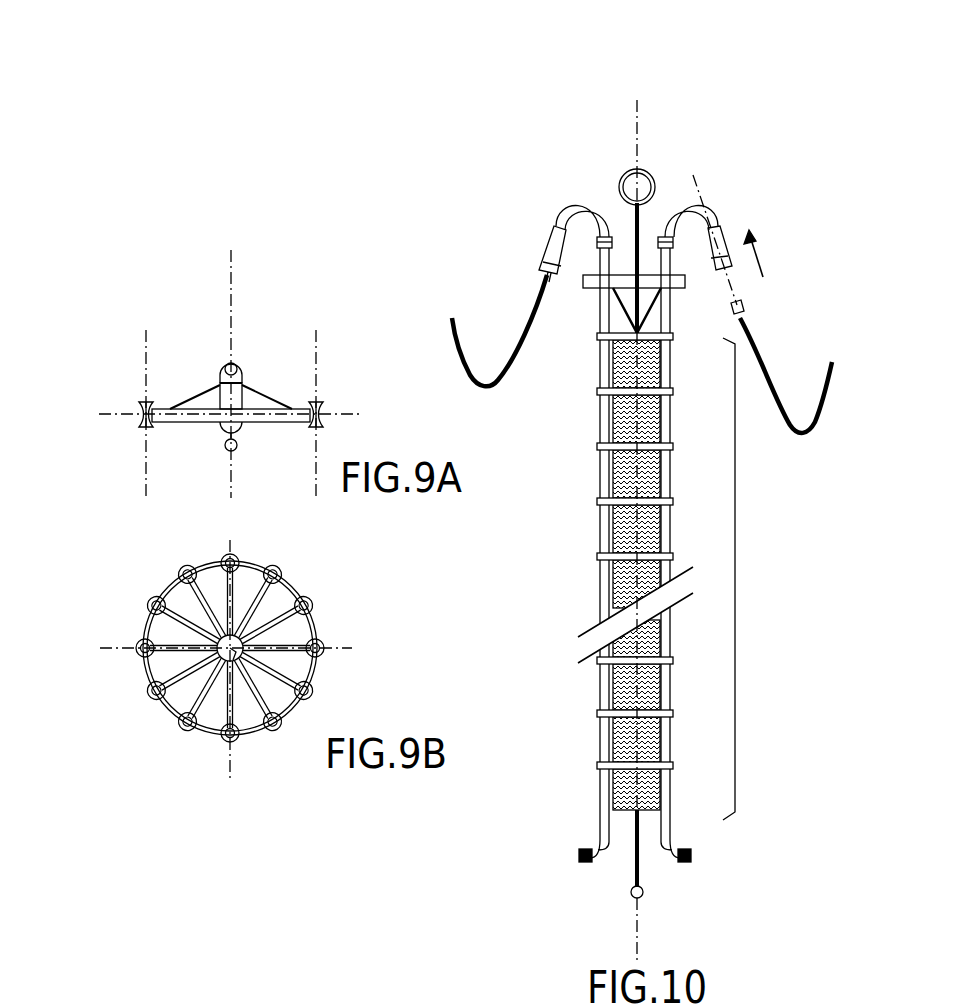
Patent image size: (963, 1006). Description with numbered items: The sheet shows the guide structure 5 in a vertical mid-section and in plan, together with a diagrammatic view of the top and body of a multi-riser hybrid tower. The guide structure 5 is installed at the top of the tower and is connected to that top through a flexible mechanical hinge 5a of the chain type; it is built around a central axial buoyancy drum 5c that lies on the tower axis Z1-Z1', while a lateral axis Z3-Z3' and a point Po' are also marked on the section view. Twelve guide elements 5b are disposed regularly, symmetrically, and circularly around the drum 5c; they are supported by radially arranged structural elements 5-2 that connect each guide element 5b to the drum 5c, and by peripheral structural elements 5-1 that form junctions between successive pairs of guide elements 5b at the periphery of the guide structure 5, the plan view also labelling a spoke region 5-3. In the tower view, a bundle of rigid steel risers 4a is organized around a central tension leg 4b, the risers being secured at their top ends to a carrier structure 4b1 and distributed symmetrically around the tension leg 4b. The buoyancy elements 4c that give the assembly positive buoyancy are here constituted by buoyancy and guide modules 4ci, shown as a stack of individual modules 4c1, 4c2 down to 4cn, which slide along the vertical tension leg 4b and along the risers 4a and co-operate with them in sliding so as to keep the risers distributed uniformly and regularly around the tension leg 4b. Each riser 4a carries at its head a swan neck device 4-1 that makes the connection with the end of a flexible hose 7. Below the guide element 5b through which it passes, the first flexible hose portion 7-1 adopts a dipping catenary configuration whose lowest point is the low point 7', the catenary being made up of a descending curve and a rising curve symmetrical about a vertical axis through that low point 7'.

In FIG. 9A, the guide structure 5 is at (190, 333).
In FIG. 9B, the guide structure 5 is at (150, 722).
In FIG. 9A, the peripheral structural elements 5-1 is at (274, 423).
In FIG. 9B, the peripheral structural elements 5-1 is at (291, 581).
In FIG. 9A, the radial structural elements 5-2 is at (200, 401).
In FIG. 9B, the radial structural elements 5-2 is at (285, 625).
In FIG. 9B, the spoke 5-3 is at (287, 656).
In FIG. 9A, the flexible mechanical hinge 5a is at (226, 449).
In FIG. 10, the flexible mechanical hinge 5a is at (632, 172).
In FIG. 9A, the guide elements 5b is at (323, 412).
In FIG. 9B, the guide elements 5b is at (306, 605).
In FIG. 9A, the buoyancy drum 5c is at (238, 393).
In FIG. 9B, the buoyancy drum 5c is at (238, 662).
In FIG. 9A, the pivot point Po' is at (103, 435).
In FIG. 9A, the axis of the tower Z1-Z1' is at (271, 264).
In FIG. 9A, the lateral axis Z3-Z3' is at (235, 340).
In FIG. 10, the rigid pipes (risers) 4a is at (600, 298).
In FIG. 10, the central tension leg 4b is at (636, 228).
In FIG. 10, the carrier structure 4b1 is at (672, 288).
In FIG. 10, the buoyancy elements 4c is at (664, 509).
In FIG. 10, the buoyancy and guide module 4c1 is at (660, 352).
In FIG. 10, the buoyancy and guide module 4c2 is at (660, 415).
In FIG. 10, the buoyancy and guide modules 4ci is at (668, 582).
In FIG. 10, the buoyancy and guide module 4cn is at (658, 793).
In FIG. 10, the swan neck device 4-1 is at (717, 221).
In FIG. 10, the flexible hose 7 is at (798, 375).
In FIG. 10, the low point 7' is at (499, 356).
In FIG. 10, the first flexible hose portion 7-1 is at (747, 311).